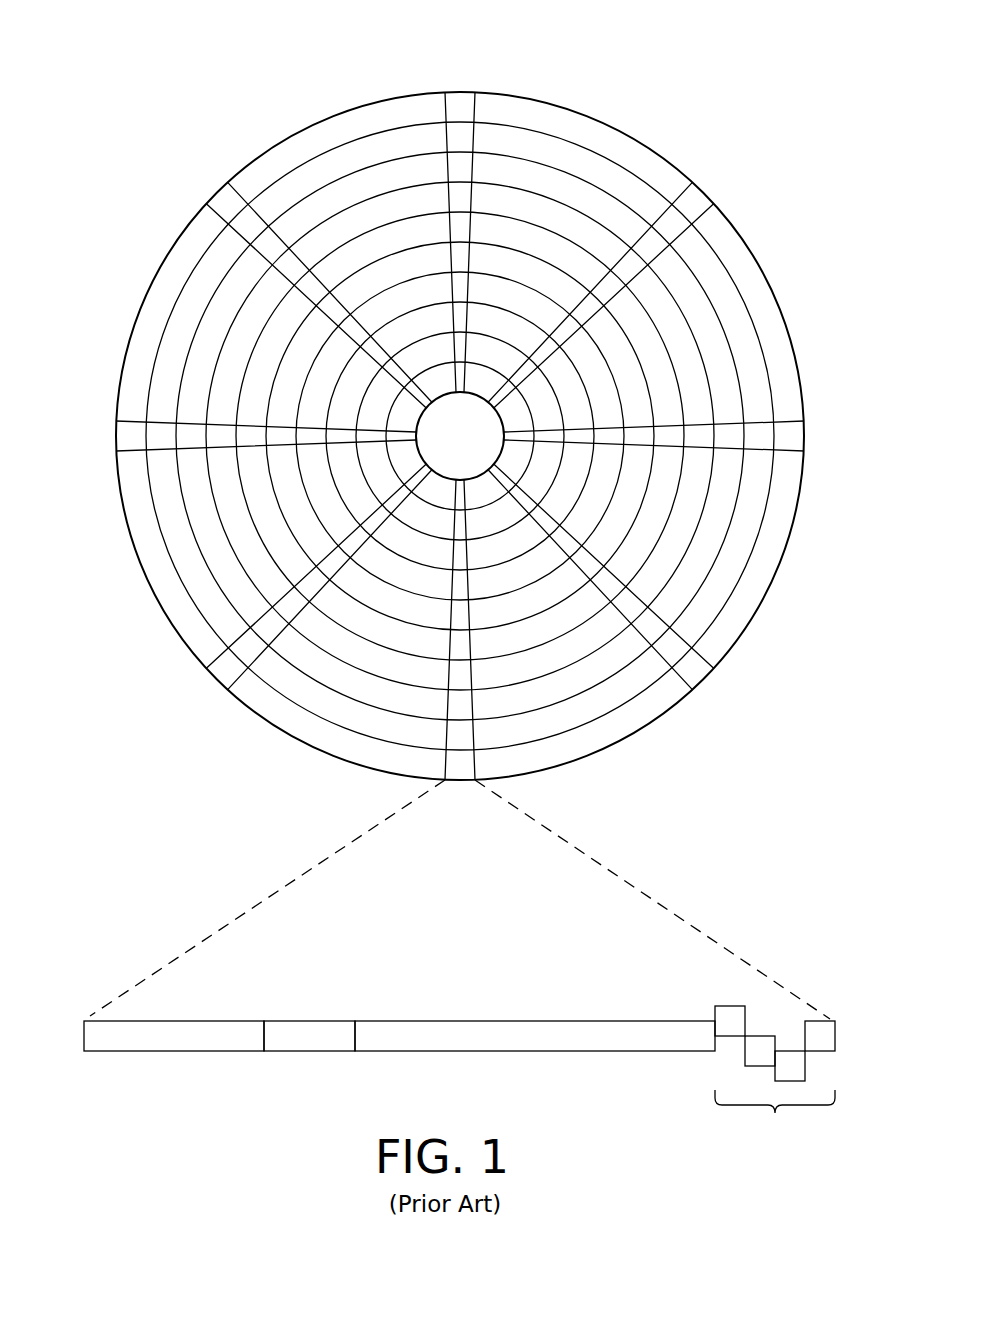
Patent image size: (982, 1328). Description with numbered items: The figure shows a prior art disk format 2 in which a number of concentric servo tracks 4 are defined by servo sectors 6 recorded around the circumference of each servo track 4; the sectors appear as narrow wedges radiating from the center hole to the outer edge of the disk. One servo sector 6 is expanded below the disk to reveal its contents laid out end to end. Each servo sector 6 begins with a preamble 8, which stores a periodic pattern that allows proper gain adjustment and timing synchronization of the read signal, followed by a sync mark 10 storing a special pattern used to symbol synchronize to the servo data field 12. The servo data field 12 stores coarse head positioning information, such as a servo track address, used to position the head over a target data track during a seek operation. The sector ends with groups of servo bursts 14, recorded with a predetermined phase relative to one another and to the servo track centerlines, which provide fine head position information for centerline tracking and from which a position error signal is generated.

The disk format 2 is at (206, 96).
The servo track 4 is at (578, 160).
The servo sector 6 is at (462, 101).
The preamble 8 is at (153, 1051).
The sync mark 10 is at (307, 1051).
The servo data field 12 is at (522, 1051).
The servo bursts 14 is at (702, 987).